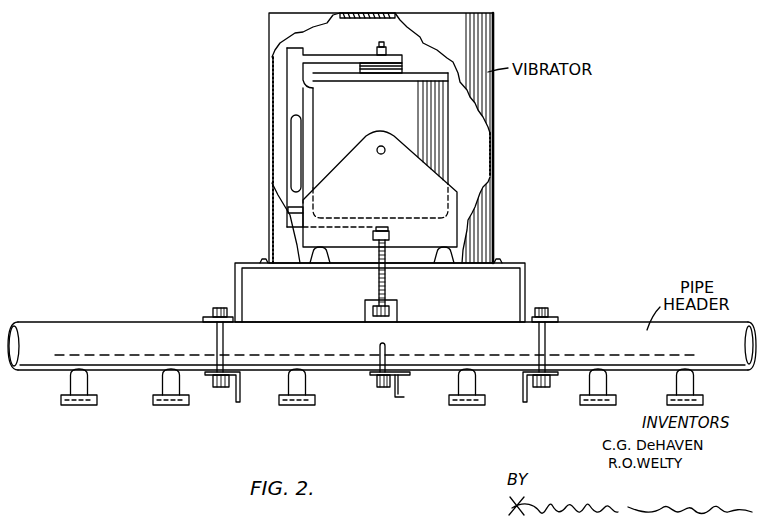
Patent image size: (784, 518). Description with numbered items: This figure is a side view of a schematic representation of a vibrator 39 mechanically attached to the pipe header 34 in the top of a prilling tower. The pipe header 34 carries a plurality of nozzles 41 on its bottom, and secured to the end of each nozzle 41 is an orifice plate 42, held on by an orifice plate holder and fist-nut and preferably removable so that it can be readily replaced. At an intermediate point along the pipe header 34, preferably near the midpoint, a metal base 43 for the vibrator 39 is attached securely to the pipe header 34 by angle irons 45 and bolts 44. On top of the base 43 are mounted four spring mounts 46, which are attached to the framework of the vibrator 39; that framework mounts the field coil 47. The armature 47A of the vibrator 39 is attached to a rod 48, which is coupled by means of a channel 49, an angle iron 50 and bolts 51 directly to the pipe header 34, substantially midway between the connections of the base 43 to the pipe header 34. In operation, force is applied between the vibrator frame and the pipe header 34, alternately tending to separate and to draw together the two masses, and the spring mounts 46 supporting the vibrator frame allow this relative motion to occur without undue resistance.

The pipe header 34 is at (80, 328).
The vibrator 39 is at (255, 41).
The nozzle 41 is at (88, 382).
The orifice plate 42 is at (78, 402).
The metal base 43 is at (528, 273).
The bolt 44 is at (214, 308).
The angle iron 45 is at (233, 398).
The spring mount 46 is at (318, 260).
The field coil 47 is at (443, 148).
The armature 47A is at (365, 62).
The rod 48 is at (377, 277).
The channel 49 is at (397, 307).
The angle iron 50 is at (402, 385).
The bolt 51 is at (377, 350).